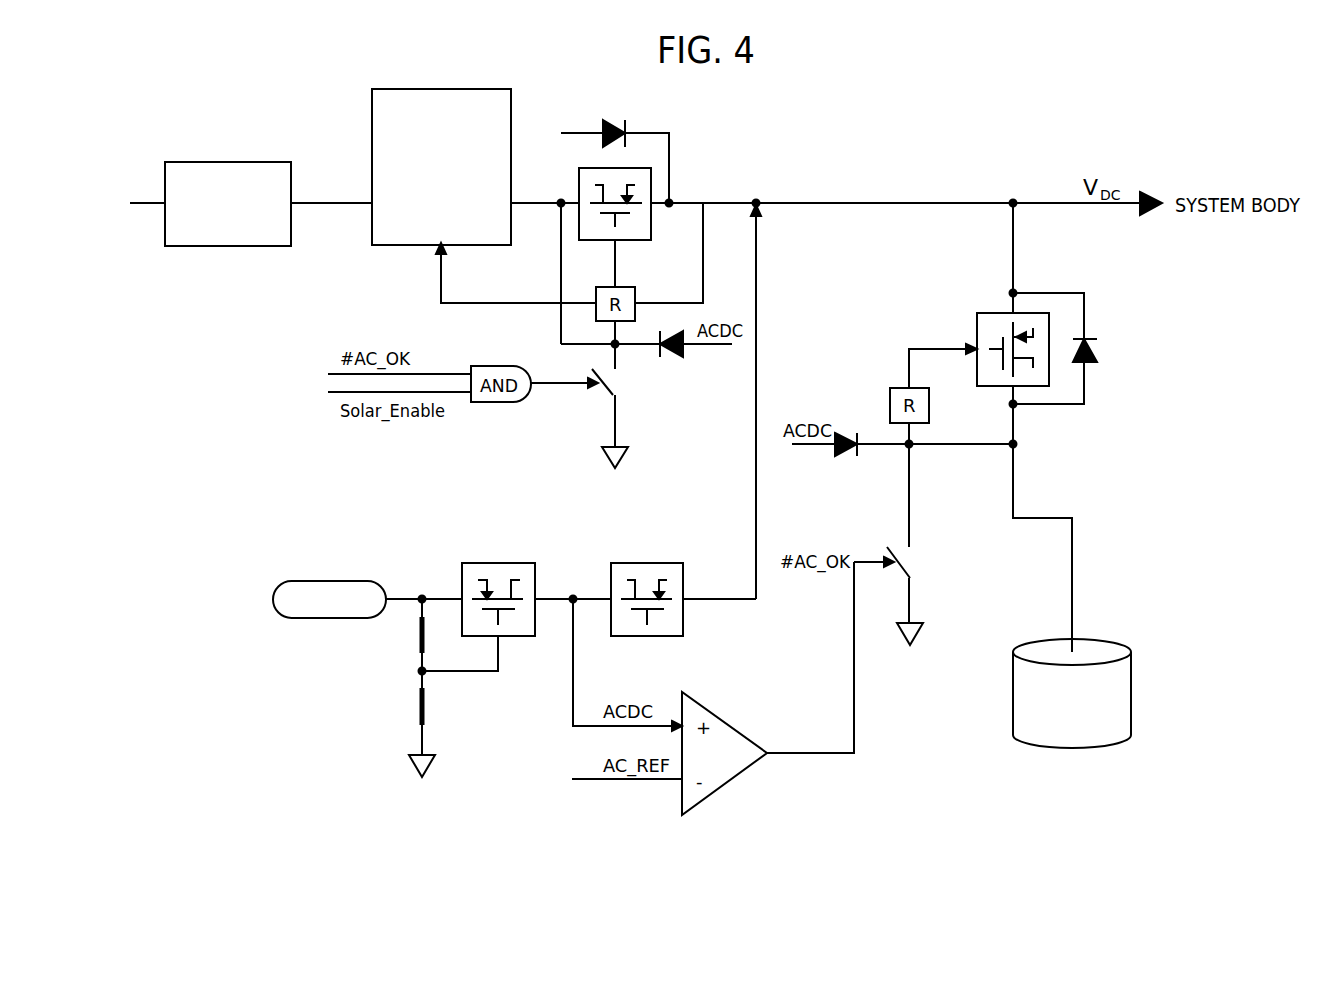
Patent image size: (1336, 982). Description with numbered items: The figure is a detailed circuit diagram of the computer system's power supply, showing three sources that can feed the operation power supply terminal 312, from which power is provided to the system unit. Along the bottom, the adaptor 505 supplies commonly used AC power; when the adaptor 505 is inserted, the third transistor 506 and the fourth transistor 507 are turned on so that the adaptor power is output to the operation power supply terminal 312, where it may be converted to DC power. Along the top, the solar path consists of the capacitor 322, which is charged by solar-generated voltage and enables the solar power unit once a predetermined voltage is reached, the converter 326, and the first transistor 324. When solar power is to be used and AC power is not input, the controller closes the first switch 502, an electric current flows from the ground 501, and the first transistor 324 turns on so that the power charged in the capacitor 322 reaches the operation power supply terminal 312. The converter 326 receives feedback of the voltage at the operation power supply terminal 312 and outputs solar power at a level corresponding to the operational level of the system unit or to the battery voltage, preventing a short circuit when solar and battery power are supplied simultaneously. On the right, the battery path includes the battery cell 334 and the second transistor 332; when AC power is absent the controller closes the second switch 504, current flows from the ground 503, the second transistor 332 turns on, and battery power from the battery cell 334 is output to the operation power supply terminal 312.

The capacitor 322 is at (218, 162).
The converter 326 is at (441, 89).
The first transistor 324 is at (587, 168).
The operation power supply terminal 312 is at (1013, 203).
The second transistor 332 is at (981, 313).
The battery cell 334 is at (1072, 748).
The first switch 502 is at (617, 387).
The ground 501 is at (628, 452).
The second switch 504 is at (912, 565).
The ground 503 is at (923, 630).
The adaptor 505 is at (325, 581).
The third transistor 506 is at (497, 563).
The fourth transistor 507 is at (645, 563).